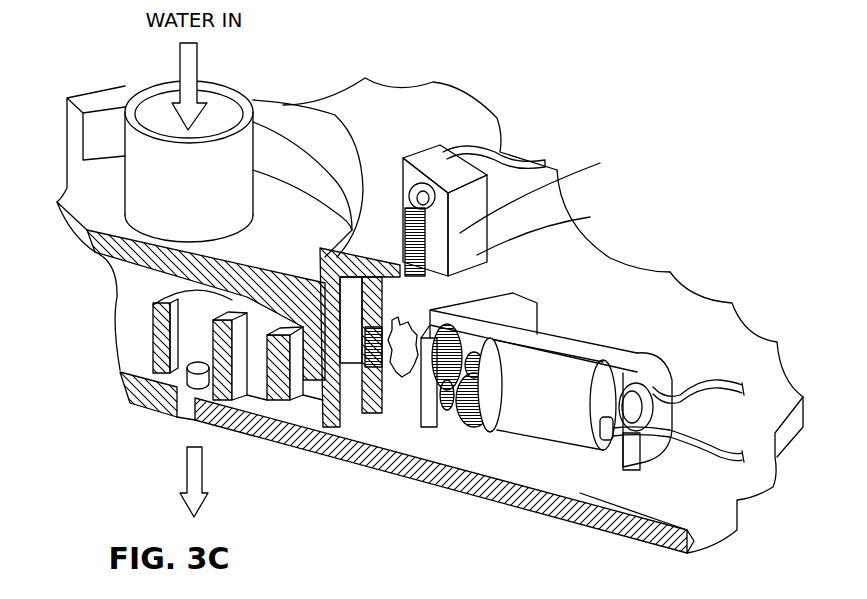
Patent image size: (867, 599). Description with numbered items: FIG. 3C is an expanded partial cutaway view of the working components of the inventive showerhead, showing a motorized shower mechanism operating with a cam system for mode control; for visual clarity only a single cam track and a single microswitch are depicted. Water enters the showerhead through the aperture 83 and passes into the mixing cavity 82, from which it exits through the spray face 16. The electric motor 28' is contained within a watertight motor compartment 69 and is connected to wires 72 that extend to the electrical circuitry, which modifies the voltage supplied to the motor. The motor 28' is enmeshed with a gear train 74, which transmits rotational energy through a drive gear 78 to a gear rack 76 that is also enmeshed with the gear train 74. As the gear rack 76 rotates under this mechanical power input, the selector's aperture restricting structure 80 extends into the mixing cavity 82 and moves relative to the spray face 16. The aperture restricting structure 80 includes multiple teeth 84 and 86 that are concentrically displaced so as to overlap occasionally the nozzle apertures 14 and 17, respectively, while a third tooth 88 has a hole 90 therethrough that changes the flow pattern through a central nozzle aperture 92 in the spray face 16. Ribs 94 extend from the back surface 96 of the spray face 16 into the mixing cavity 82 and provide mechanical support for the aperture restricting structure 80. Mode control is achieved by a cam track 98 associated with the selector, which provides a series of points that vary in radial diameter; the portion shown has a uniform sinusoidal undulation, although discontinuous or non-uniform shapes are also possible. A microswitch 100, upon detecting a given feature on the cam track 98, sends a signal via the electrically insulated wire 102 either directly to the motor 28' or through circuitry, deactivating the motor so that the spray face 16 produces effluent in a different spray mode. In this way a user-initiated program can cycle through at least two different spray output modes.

The aperture 83 is at (152, 110).
The mixing cavity 82 is at (150, 289).
The aperture restricting structure 80 is at (227, 297).
The hole 90 is at (210, 350).
The back surface 96 is at (160, 345).
The third tooth 88 is at (195, 398).
The central nozzle aperture 92 is at (193, 420).
The watertight motor compartment 69 is at (500, 422).
The spray face 16 is at (220, 418).
The nozzle aperture 14 is at (253, 430).
The ribs 94 is at (273, 437).
The nozzle aperture 17 is at (303, 450).
The tooth 86 is at (337, 400).
The tooth 84 is at (363, 400).
The cam track 98 is at (387, 172).
The microswitch 100 is at (555, 192).
The electrically insulated wire 102 is at (515, 155).
The gear rack 76 is at (555, 240).
The drive gear 78 is at (460, 400).
The gear train 74 is at (452, 438).
The wires 72 is at (653, 467).
The electric motor 28' is at (628, 535).